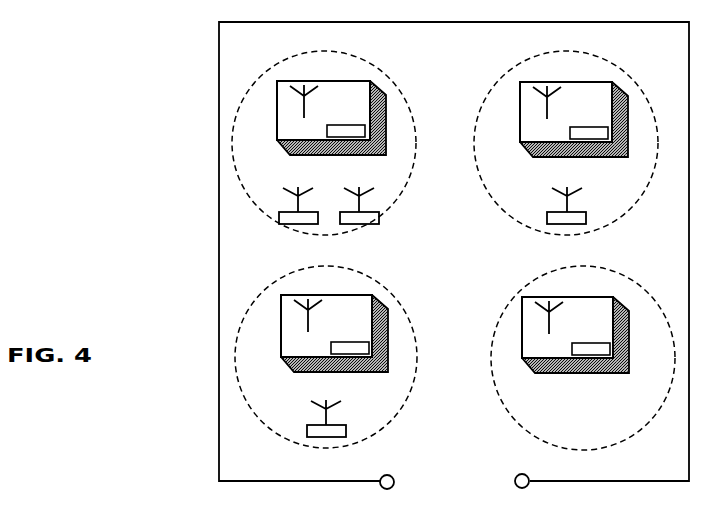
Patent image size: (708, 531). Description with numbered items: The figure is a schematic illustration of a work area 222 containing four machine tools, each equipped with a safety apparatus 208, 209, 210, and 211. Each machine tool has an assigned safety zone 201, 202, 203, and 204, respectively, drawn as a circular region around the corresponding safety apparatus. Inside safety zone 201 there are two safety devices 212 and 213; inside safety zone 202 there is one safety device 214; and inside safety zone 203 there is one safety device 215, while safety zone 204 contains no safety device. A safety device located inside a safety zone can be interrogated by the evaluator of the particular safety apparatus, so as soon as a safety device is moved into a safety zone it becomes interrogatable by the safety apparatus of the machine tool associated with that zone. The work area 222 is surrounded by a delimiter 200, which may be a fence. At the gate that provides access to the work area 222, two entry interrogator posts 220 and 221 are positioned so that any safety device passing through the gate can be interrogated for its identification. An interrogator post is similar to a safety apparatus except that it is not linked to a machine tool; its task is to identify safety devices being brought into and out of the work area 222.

The delimiter 200 is at (219, 65).
The safety zone 201 is at (393, 105).
The safety zone 202 is at (636, 110).
The safety zone 203 is at (402, 357).
The safety zone 204 is at (537, 404).
The safety apparatus 208 is at (364, 105).
The safety apparatus 209 is at (607, 106).
The safety apparatus 210 is at (368, 319).
The safety apparatus 211 is at (609, 321).
The safety device 212 is at (292, 220).
The safety device 213 is at (347, 220).
The safety device 214 is at (558, 222).
The safety device 215 is at (306, 437).
The entry interrogator post 220 is at (382, 487).
The entry interrogator post 221 is at (529, 487).
The work area 222 is at (453, 224).